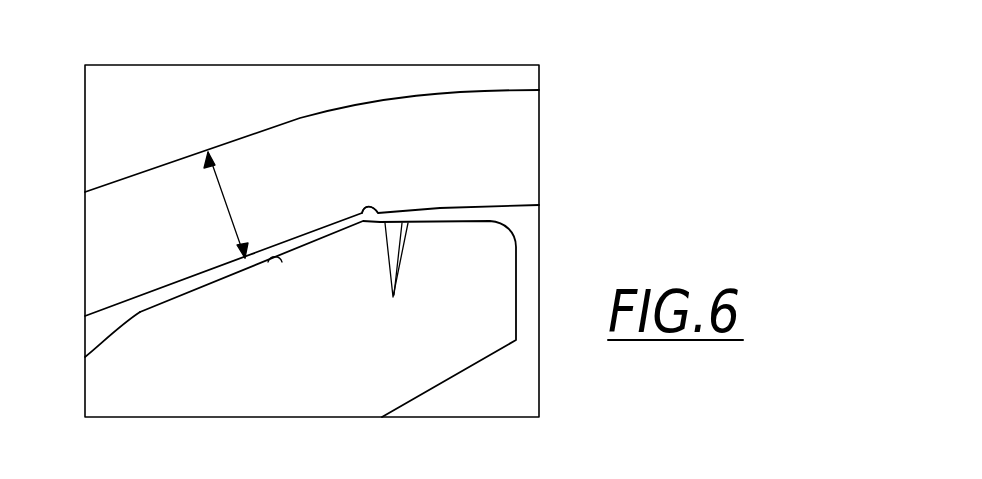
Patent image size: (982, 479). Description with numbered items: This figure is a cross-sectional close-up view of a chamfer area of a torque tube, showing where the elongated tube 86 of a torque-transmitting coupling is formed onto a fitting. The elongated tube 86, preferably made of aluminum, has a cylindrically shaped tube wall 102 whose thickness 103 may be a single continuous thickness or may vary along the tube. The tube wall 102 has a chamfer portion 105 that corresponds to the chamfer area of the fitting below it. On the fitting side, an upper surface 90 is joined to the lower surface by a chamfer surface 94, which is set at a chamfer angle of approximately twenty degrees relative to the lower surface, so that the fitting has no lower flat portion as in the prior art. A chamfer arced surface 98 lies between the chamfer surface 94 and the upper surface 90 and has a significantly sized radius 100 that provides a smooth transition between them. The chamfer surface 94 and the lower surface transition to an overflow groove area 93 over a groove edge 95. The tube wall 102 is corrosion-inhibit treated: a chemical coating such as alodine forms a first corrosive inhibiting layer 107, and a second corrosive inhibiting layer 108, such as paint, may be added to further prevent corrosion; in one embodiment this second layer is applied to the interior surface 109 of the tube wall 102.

The elongated tube 86 is at (502, 89).
The tube wall 102 is at (530, 124).
The thickness 103 is at (228, 204).
The chamfer portion 105 is at (392, 185).
The upper surface 90 is at (447, 215).
The chamfer arced surface 98 is at (362, 220).
The radius 100 is at (395, 253).
The interior surface 109 is at (302, 240).
The first corrosive inhibiting layer 107 is at (242, 273).
The second corrosive inhibiting layer 108 is at (218, 281).
The chamfer surface 94 is at (282, 262).
The groove edge 95 is at (138, 318).
The overflow groove area 93 is at (93, 357).